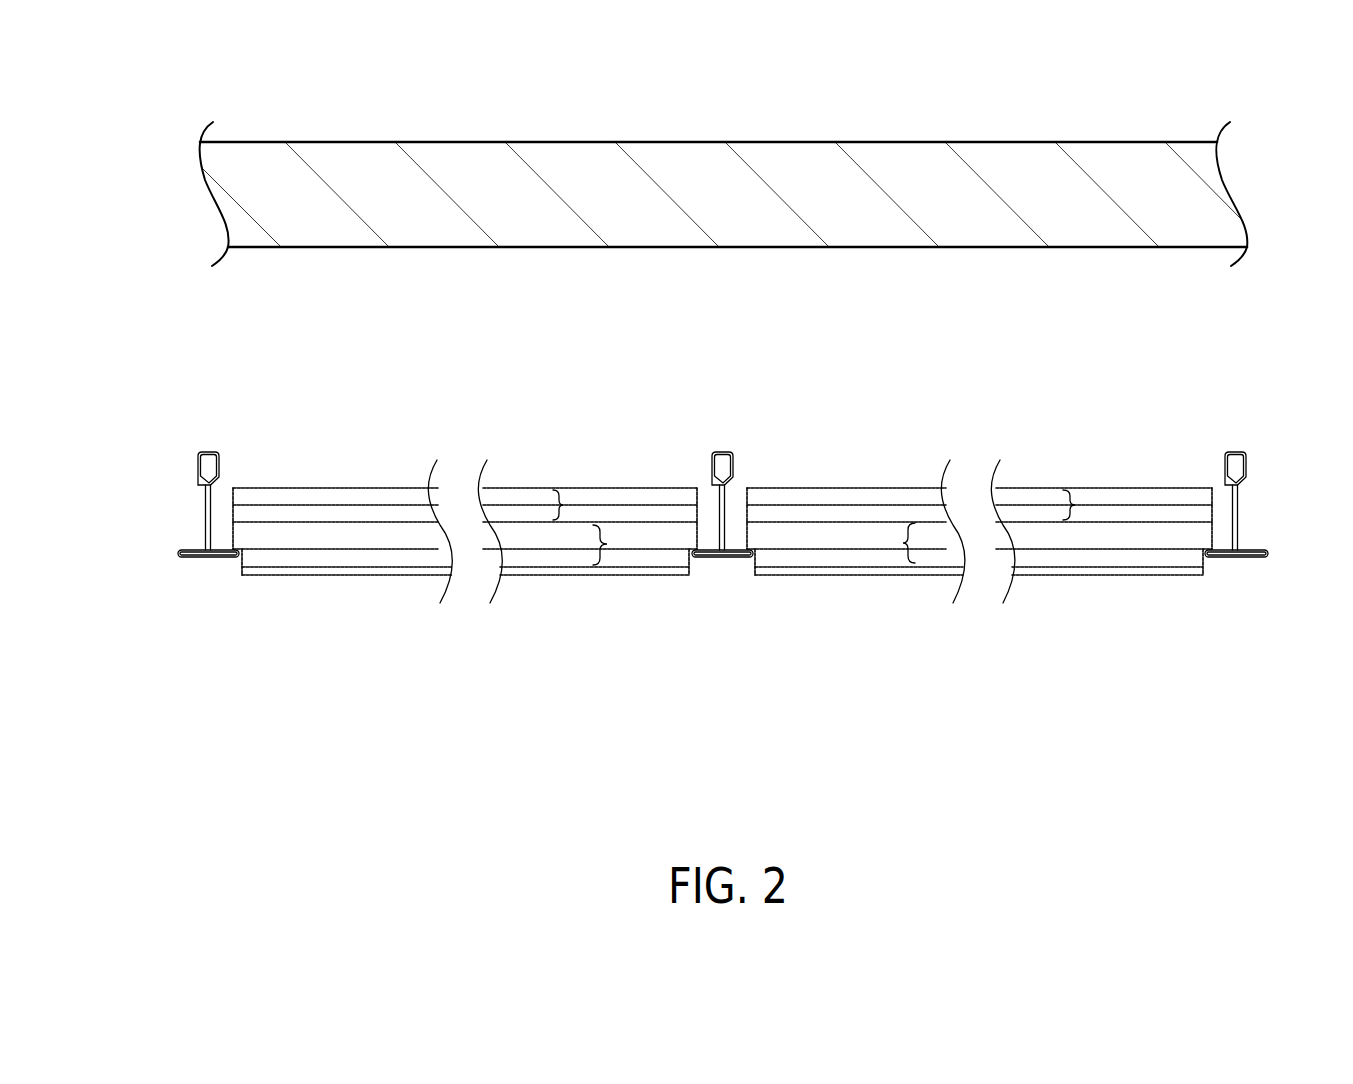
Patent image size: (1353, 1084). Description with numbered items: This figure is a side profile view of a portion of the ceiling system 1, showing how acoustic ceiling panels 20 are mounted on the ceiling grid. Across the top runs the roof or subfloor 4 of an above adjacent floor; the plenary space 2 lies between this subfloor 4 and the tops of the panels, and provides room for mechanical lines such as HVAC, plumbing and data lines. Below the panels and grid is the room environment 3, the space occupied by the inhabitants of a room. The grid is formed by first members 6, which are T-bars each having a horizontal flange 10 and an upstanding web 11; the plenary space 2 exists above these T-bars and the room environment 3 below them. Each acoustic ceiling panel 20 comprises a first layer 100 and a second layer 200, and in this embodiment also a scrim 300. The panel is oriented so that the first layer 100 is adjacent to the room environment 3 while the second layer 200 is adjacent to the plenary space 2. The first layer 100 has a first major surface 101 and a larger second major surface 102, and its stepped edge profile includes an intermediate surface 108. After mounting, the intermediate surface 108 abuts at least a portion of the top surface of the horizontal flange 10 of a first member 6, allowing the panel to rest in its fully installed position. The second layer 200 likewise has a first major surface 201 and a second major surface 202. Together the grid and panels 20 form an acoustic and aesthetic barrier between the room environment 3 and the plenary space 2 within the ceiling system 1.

The ceiling system 1 is at (1224, 736).
The plenary space 2 is at (320, 356).
The room environment 3 is at (323, 675).
The subfloor 4 is at (706, 208).
The first member 6 is at (188, 467).
The horizontal flange 10 is at (207, 562).
The web 11 is at (205, 525).
The acoustic ceiling panel 20 is at (578, 610).
The first layer 100 is at (607, 544).
The first major surface 101 is at (270, 568).
The second major surface 102 is at (411, 512).
The intermediate surface 108 is at (238, 566).
The second layer 200 is at (563, 505).
The first major surface 201 is at (293, 522).
The second major surface 202 is at (372, 489).
The scrim 300 is at (542, 571).